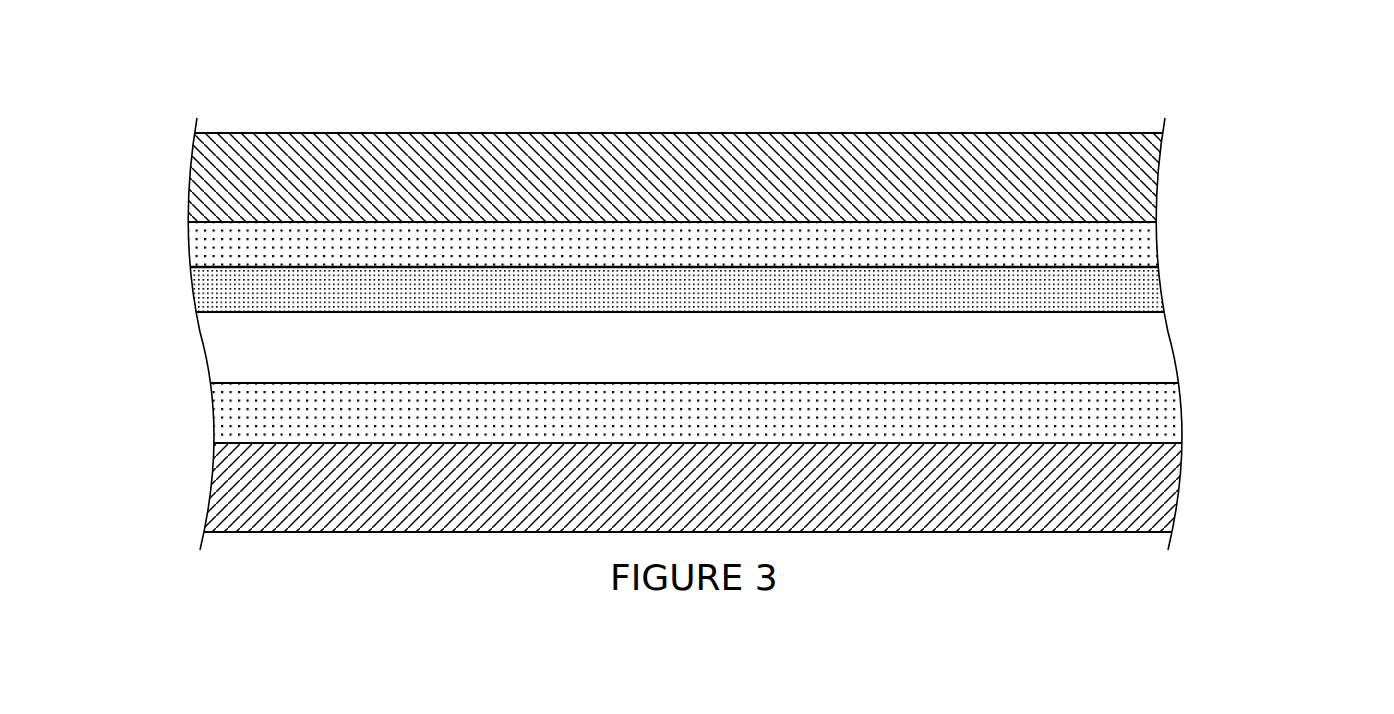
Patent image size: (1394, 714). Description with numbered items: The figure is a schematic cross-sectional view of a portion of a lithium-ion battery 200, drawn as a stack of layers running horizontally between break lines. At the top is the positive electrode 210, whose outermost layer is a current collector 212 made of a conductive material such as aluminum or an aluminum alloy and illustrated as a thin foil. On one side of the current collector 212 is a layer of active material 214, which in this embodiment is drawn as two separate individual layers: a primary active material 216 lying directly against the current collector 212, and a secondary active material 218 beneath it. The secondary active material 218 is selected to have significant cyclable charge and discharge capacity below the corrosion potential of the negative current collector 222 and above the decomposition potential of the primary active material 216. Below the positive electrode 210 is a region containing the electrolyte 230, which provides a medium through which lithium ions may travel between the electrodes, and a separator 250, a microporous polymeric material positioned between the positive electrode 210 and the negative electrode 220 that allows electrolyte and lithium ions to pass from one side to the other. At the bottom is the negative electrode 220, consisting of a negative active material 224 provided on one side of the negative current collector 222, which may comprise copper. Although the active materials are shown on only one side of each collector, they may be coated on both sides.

The lithium-ion battery 200 is at (925, 75).
The positive electrode 210 is at (1287, 133).
The current collector 212 is at (540, 163).
The layer of active material 214 is at (1175, 222).
The primary active material 216 is at (213, 245).
The secondary active material 218 is at (208, 290).
The electrolyte 230 is at (562, 365).
The separator 250 is at (1103, 363).
The negative electrode 220 is at (1202, 383).
The negative active material 224 is at (250, 418).
The negative current collector 222 is at (1002, 512).